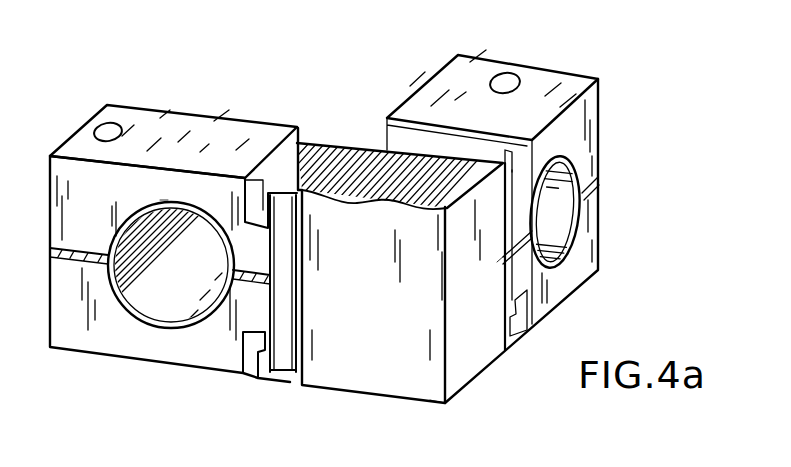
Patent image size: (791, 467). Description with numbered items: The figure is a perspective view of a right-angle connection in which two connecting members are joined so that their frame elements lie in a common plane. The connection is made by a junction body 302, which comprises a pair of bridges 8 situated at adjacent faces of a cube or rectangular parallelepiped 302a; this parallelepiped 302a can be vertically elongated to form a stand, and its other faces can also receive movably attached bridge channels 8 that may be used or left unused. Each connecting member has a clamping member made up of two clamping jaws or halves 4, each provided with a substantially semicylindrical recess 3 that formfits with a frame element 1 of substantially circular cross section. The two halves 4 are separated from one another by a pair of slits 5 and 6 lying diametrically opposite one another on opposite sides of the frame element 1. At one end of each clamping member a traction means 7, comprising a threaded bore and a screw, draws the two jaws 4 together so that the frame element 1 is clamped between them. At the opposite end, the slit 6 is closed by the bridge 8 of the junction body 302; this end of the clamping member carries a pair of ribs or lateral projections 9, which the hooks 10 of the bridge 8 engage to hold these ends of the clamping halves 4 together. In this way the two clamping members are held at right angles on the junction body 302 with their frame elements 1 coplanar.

The frame element 1 is at (192, 233).
The semicylindrical recess 3 is at (163, 190).
The clamping jaws 4 is at (136, 188).
The slit 5 is at (67, 253).
The slit 6 is at (257, 285).
The traction means 7 is at (116, 130).
The bridge 8 is at (500, 257).
The ribs 9 is at (280, 217).
The hooks 10 is at (295, 190).
The junction body 302 is at (358, 380).
The rectangular parallelepiped 302a is at (430, 406).